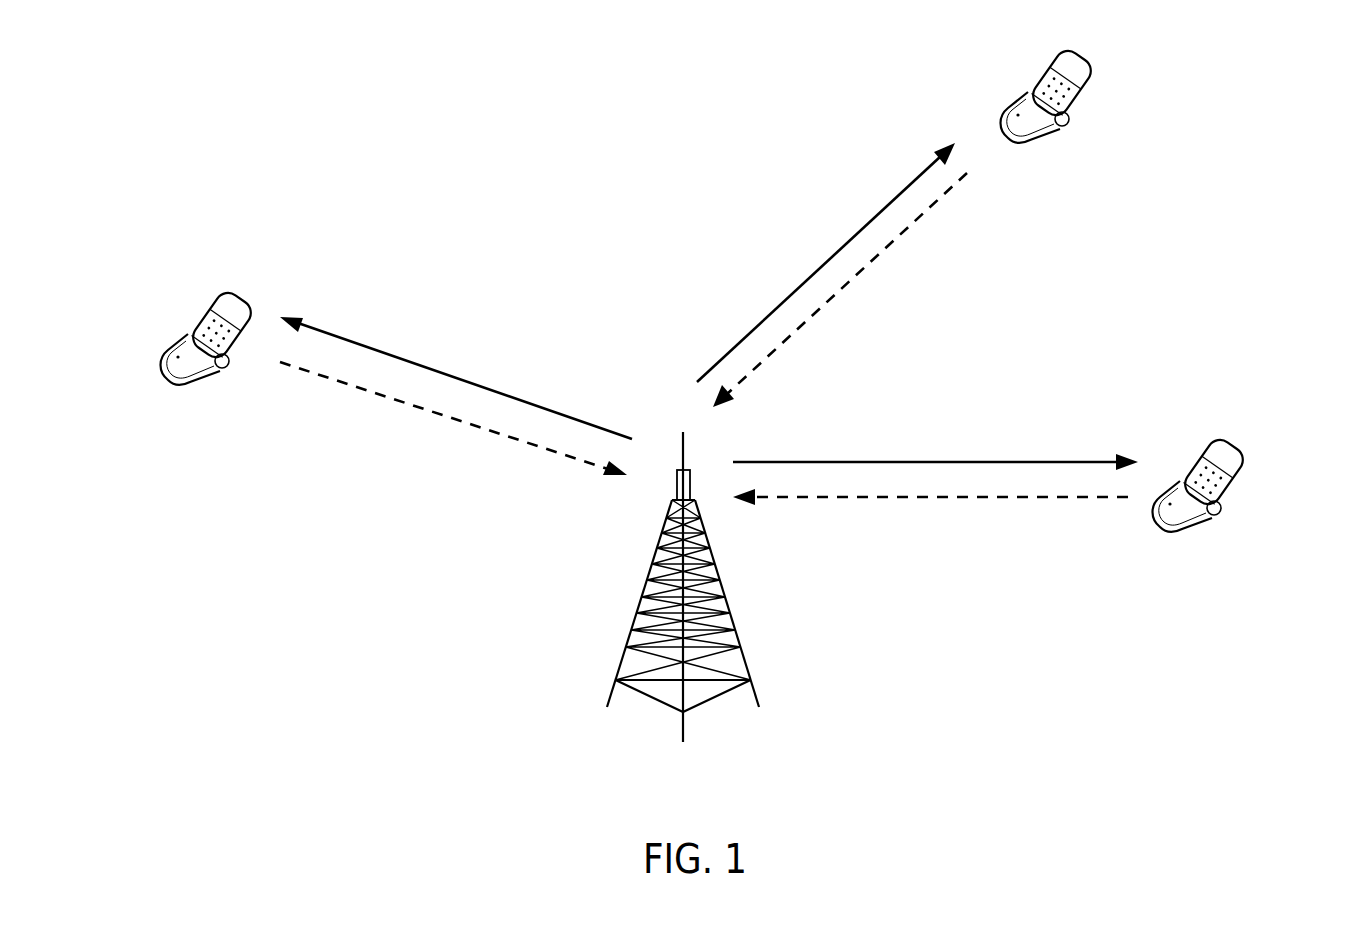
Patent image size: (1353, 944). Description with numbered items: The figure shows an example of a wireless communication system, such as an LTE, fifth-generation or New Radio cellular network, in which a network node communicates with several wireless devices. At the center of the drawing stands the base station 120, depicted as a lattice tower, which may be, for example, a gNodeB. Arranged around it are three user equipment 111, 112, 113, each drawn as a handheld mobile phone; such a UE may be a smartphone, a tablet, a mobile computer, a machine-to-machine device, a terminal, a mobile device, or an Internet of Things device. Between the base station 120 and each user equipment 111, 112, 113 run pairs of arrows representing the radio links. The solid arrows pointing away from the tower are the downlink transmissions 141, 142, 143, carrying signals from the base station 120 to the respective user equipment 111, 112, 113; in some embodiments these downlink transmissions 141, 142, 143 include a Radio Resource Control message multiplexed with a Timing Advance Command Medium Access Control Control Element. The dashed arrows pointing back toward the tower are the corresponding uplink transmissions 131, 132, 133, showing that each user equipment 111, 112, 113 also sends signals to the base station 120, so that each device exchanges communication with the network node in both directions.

The user equipment 111 is at (217, 378).
The user equipment 112 is at (1207, 525).
The user equipment 113 is at (1058, 137).
The base station 120 is at (745, 663).
The uplink transmission 131 is at (497, 432).
The uplink transmission 132 is at (897, 498).
The uplink transmission 133 is at (863, 267).
The downlink transmission 141 is at (390, 353).
The downlink transmission 142 is at (1045, 460).
The downlink transmission 143 is at (873, 217).